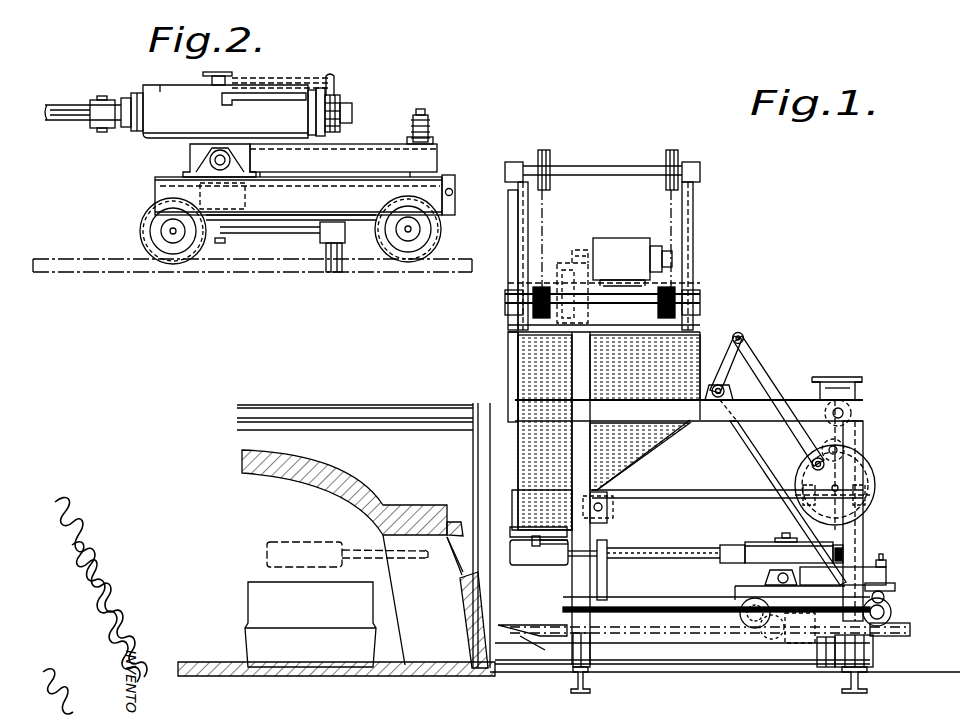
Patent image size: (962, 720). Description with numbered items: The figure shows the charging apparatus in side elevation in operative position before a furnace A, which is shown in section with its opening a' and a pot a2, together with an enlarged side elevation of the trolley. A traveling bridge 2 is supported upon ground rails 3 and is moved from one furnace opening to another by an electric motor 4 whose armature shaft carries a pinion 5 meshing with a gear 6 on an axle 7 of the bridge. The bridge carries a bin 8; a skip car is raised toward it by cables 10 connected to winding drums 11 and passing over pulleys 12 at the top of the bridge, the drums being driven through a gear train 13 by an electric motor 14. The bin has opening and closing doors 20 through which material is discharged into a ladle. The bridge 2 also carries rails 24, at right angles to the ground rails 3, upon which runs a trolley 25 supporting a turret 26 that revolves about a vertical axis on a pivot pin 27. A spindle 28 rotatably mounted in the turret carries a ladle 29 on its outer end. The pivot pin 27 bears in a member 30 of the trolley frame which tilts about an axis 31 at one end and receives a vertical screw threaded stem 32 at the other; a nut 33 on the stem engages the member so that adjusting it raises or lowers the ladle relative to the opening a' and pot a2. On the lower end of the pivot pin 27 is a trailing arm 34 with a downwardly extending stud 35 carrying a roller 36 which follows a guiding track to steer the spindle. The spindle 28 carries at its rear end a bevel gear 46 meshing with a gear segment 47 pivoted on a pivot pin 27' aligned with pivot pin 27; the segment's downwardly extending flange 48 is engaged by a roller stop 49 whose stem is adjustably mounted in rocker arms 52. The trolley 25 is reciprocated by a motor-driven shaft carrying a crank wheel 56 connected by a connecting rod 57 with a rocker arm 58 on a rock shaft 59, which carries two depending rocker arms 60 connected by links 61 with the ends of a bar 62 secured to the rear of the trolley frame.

In FIG. 1, the traveling bridge 2 is at (863, 408).
In FIG. 1, the ground rails 3 is at (592, 680).
In FIG. 1, the electric motor 4 is at (780, 640).
In FIG. 1, the pinion 5 is at (828, 637).
In FIG. 1, the gear 6 is at (820, 660).
In FIG. 1, the axle 7 is at (722, 652).
In FIG. 1, the bin 8 is at (665, 376).
In FIG. 1, the cables 10 is at (543, 210).
In FIG. 1, the winding drums 11 is at (530, 297).
In FIG. 1, the pulleys 12 is at (548, 156).
In FIG. 1, the gear train 13 is at (574, 264).
In FIG. 1, the electric motor 14 is at (612, 245).
In FIG. 1, the doors 20 is at (607, 516).
In FIG. 2, the rails 24 is at (446, 269).
In FIG. 1, the rails 24 is at (540, 637).
In FIG. 2, the trolley 25 is at (297, 219).
In FIG. 1, the trolley 25 is at (735, 594).
In FIG. 2, the turret 26 is at (214, 111).
In FIG. 1, the turret 26 is at (752, 550).
In FIG. 2, the pivot pin 27 is at (218, 267).
In FIG. 2, the pivot pin 27' is at (233, 68).
In FIG. 1, the pivot pin 27' is at (788, 529).
In FIG. 2, the shaft or spindle 28 is at (76, 121).
In FIG. 1, the shaft or spindle 28 is at (690, 557).
In FIG. 1, the ladle 29 is at (314, 548).
In FIG. 2, the member of trolley frame 30 is at (343, 160).
In FIG. 1, the member of trolley frame 30 is at (888, 584).
In FIG. 2, the axis 31 is at (210, 160).
In FIG. 1, the axis 31 is at (770, 580).
In FIG. 2, the screw threaded stem 32 is at (423, 114).
In FIG. 2, the nut 33 is at (434, 140).
In FIG. 2, the trailing arm 34 is at (273, 234).
In FIG. 2, the stud 35 is at (333, 272).
In FIG. 2, the roller 36 is at (345, 238).
In FIG. 2, the bevel gear 46 is at (340, 102).
In FIG. 1, the bevel gear 46 is at (845, 558).
In FIG. 2, the gear segment 47 is at (330, 80).
In FIG. 1, the gear segment 47 is at (843, 548).
In FIG. 2, the flange 48 is at (242, 102).
In FIG. 1, the stop 49 is at (658, 536).
In FIG. 1, the rocker arms 52 is at (534, 550).
In FIG. 1, the crank wheel 56 is at (872, 472).
In FIG. 1, the connecting rod 57 is at (772, 386).
In FIG. 1, the rocker arm 58 is at (728, 360).
In FIG. 1, the rock shaft 59 is at (714, 402).
In FIG. 1, the depending rocker arms 60 is at (758, 450).
In FIG. 1, the links 61 is at (896, 587).
In FIG. 1, the bar 62 is at (885, 598).
In FIG. 1, the furnace A is at (569, 539).
In FIG. 1, the opening a' is at (443, 561).
In FIG. 1, the pot a2 is at (310, 624).